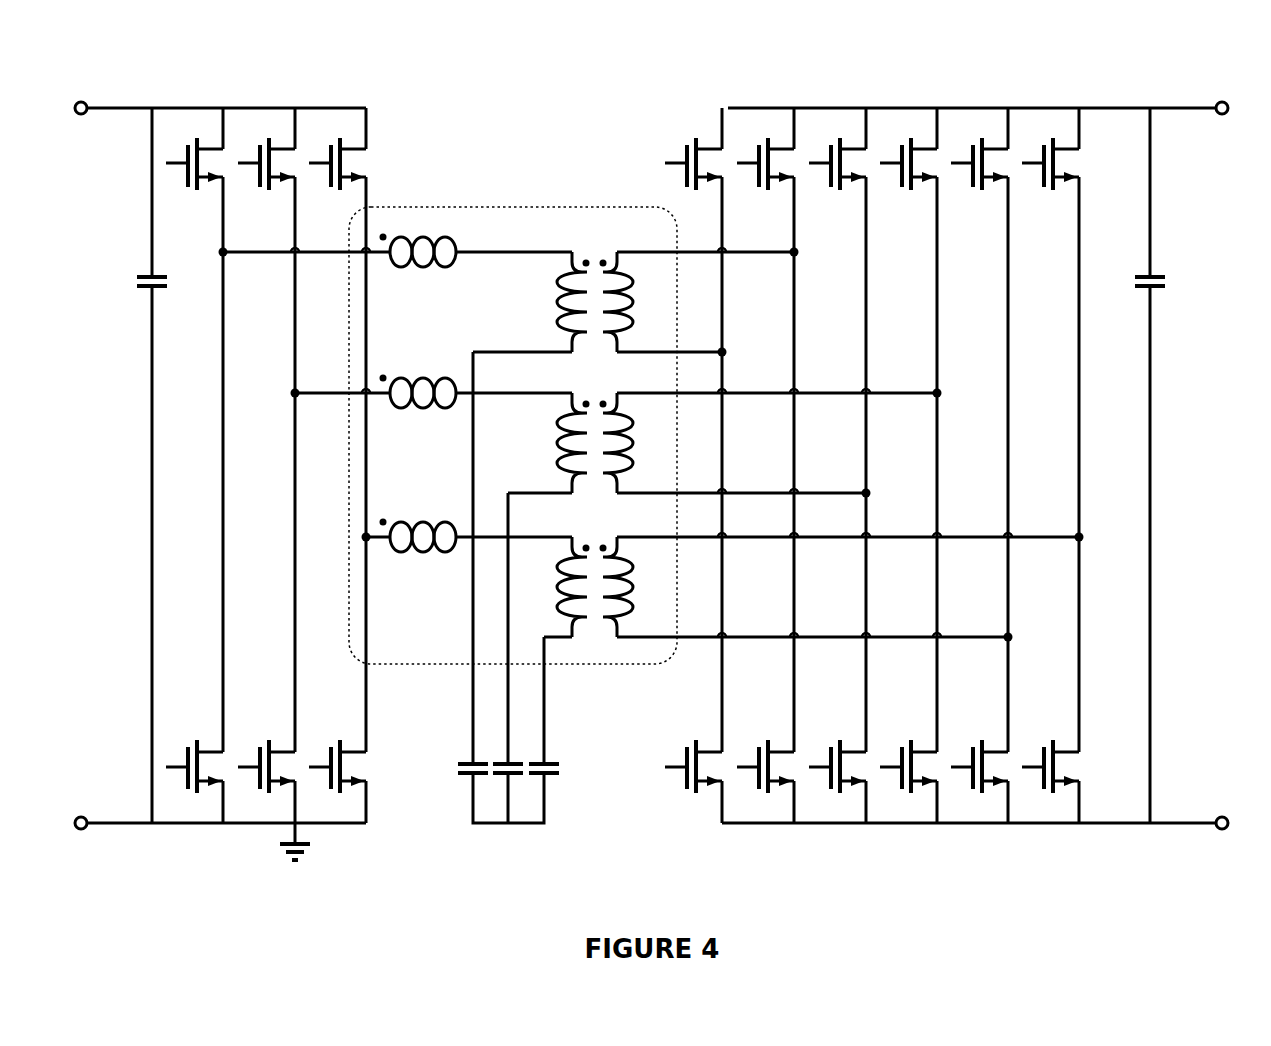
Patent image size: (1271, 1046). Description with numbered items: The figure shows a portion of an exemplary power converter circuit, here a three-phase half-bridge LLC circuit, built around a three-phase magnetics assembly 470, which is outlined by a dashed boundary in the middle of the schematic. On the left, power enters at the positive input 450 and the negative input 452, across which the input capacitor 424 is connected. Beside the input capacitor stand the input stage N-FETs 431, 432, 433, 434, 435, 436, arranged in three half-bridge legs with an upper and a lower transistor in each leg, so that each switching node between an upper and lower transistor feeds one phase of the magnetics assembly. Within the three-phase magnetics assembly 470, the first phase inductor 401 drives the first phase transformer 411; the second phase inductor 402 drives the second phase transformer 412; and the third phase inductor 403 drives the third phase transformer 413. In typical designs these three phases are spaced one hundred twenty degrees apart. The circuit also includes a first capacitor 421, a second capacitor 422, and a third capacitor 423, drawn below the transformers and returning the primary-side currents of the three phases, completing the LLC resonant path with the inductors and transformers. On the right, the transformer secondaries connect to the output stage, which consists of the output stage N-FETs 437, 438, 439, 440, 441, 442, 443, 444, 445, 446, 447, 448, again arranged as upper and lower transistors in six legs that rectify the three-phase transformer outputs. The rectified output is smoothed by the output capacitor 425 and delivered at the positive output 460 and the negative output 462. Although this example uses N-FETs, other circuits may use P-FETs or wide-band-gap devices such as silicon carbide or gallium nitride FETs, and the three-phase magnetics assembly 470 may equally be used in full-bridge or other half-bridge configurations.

The inductor L1 401 is at (418, 258).
The inductor L2 402 is at (418, 399).
The inductor L3 403 is at (418, 543).
The transformer T1 411 is at (612, 309).
The transformer T2 412 is at (612, 450).
The transformer T3 413 is at (612, 594).
The capacitor C1 421 is at (457, 780).
The capacitor C2 422 is at (514, 771).
The capacitor C3 423 is at (557, 780).
The input capacitor Cin 424 is at (136, 288).
The output capacitor Co 425 is at (1163, 288).
The input stage N-FET 431 is at (194, 170).
The input stage N-FET 432 is at (266, 170).
The input stage N-FET 433 is at (337, 170).
The input stage N-FET 434 is at (194, 769).
The input stage N-FET 435 is at (266, 769).
The input stage N-FET 436 is at (337, 769).
The output stage N-FET 437 is at (693, 170).
The output stage N-FET 438 is at (765, 170).
The output stage N-FET 439 is at (837, 170).
The output stage N-FET 440 is at (908, 170).
The output stage N-FET 441 is at (979, 170).
The output stage N-FET 442 is at (1050, 170).
The output stage N-FET 443 is at (693, 769).
The output stage N-FET 444 is at (765, 769).
The output stage N-FET 445 is at (837, 769).
The output stage N-FET 446 is at (908, 769).
The output stage N-FET 447 is at (979, 769).
The output stage N-FET 448 is at (1050, 769).
The input Vi+ 450 is at (95, 91).
The input Vi- 452 is at (95, 839).
The output Vo+ 460 is at (1208, 91).
The output Vo- 462 is at (1208, 839).
The three-phase magnetics assembly 470 is at (460, 193).